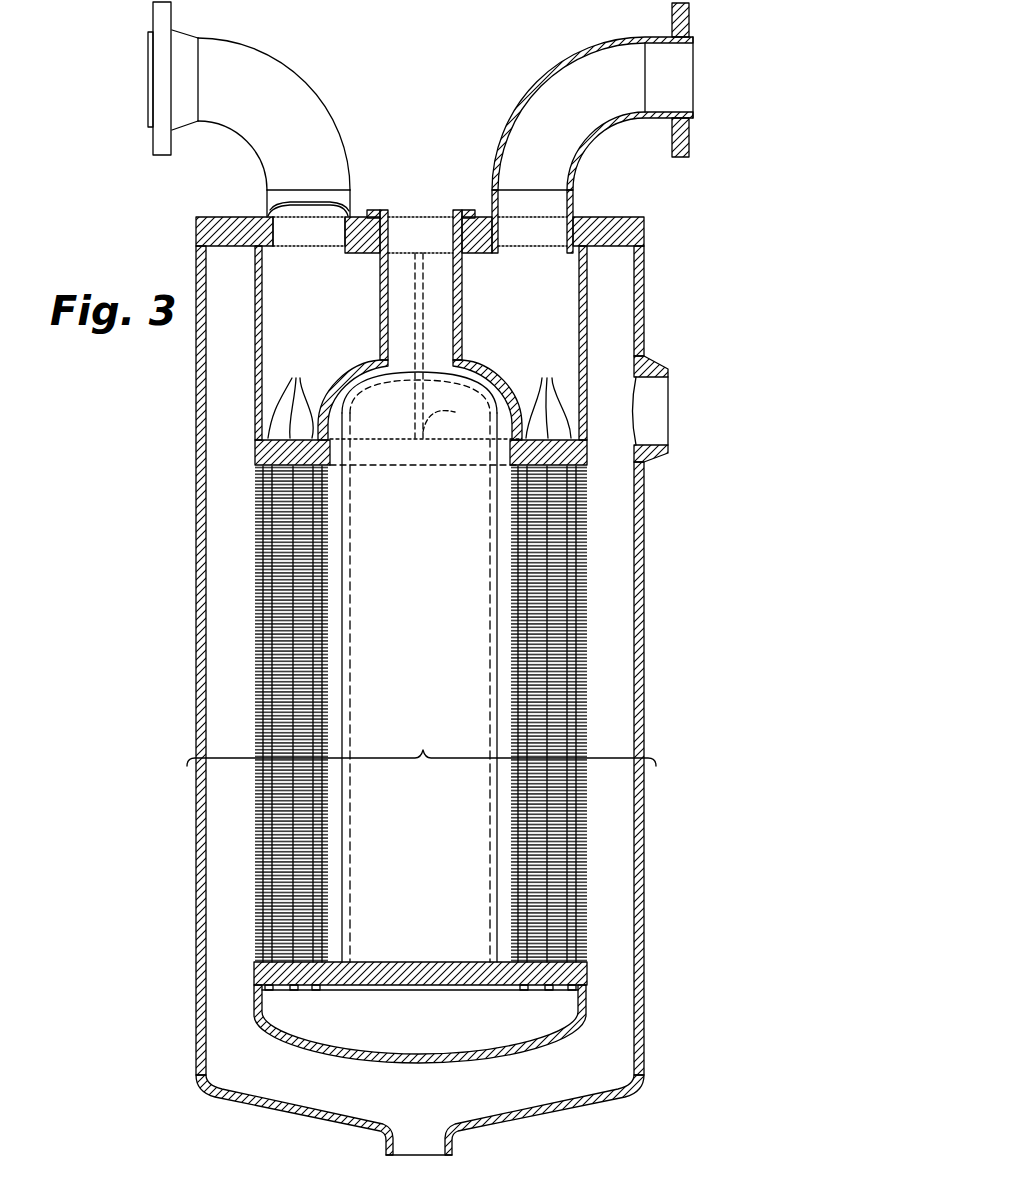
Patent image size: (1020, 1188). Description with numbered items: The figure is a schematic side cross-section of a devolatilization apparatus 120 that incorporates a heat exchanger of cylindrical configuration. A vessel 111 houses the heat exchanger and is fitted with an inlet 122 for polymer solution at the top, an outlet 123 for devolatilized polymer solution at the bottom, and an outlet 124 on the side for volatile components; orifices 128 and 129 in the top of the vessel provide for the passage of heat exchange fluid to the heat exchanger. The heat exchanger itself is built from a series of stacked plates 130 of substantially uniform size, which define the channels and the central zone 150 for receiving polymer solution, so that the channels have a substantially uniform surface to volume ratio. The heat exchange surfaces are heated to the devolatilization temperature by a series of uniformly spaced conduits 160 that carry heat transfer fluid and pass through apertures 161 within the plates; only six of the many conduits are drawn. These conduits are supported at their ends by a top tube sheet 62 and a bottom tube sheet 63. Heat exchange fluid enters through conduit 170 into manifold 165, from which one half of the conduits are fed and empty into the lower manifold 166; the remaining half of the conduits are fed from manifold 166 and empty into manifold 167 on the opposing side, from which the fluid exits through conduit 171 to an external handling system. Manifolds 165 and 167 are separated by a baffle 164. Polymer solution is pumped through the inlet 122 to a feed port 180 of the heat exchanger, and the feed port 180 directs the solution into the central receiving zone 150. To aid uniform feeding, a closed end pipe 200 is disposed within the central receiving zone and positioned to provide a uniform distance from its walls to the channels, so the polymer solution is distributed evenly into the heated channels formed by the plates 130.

The vessel 111 is at (645, 820).
The devolatilization apparatus 120 is at (421, 742).
The inlet 122 is at (437, 200).
The outlet 123 is at (395, 1142).
The outlet 124 is at (655, 366).
The orifice 128 is at (276, 212).
The orifice 129 is at (545, 226).
The stacked plates 130 is at (255, 698).
The central zone 150 is at (331, 536).
The conduits 160 is at (420, 395).
The apertures 161 is at (312, 572).
The baffle 164 is at (425, 418).
The manifold 165 is at (336, 300).
The lower manifold 166 is at (355, 1030).
The manifold 167 is at (542, 300).
The conduit 170 is at (296, 78).
The conduit 171 is at (532, 83).
The feed port 180 is at (380, 316).
The closed end pipe 200 is at (340, 628).
The top tube sheet 62 is at (255, 452).
The bottom tube sheet 63 is at (254, 975).